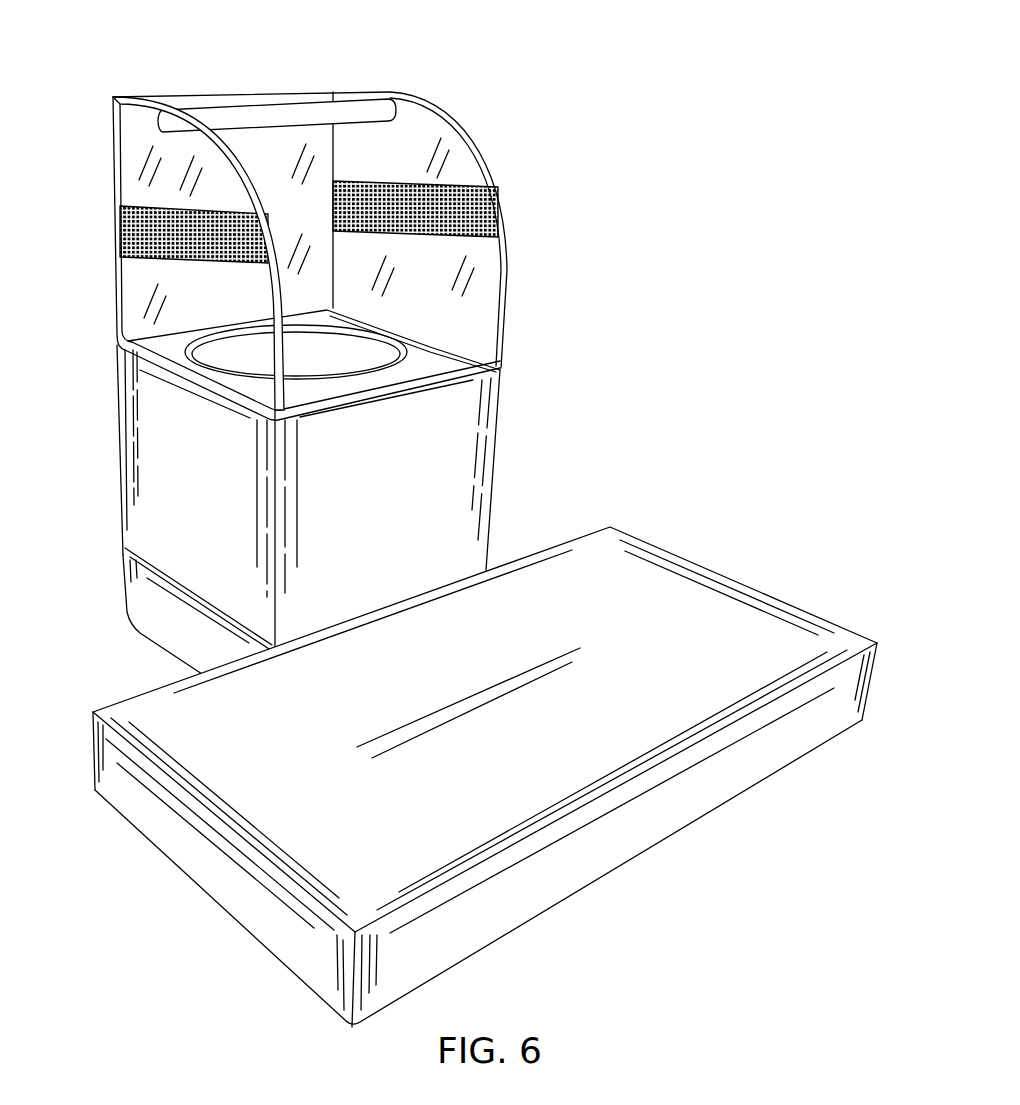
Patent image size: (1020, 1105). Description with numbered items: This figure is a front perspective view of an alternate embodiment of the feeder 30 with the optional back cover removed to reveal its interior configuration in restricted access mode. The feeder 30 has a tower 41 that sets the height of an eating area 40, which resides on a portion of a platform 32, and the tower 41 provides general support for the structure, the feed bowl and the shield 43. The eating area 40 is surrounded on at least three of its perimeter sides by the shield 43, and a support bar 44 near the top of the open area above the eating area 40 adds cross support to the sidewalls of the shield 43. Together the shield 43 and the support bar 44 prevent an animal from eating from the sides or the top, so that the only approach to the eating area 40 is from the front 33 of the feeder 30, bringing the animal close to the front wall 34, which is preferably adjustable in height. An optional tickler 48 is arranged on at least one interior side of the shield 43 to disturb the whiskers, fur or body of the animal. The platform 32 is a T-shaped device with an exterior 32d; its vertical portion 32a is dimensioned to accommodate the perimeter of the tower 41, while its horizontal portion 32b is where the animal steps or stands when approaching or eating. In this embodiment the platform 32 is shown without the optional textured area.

The feeder 30 is at (290, 220).
The platform 32 is at (485, 777).
The vertical portion 32a is at (140, 597).
The horizontal portion 32b is at (207, 883).
The exterior 32d is at (670, 818).
The front 33 is at (334, 496).
The front wall 34 is at (480, 438).
The eating area 40 is at (427, 353).
The tower 41 is at (133, 440).
The shield 43 is at (114, 173).
The support bar 44 is at (300, 112).
The tickler 48 is at (497, 242).